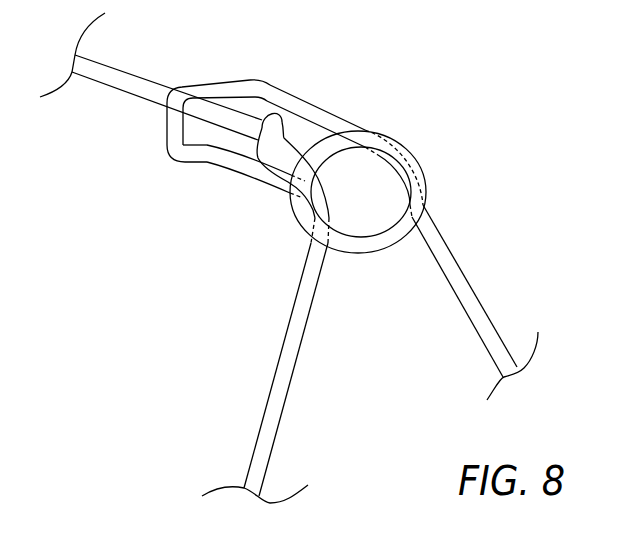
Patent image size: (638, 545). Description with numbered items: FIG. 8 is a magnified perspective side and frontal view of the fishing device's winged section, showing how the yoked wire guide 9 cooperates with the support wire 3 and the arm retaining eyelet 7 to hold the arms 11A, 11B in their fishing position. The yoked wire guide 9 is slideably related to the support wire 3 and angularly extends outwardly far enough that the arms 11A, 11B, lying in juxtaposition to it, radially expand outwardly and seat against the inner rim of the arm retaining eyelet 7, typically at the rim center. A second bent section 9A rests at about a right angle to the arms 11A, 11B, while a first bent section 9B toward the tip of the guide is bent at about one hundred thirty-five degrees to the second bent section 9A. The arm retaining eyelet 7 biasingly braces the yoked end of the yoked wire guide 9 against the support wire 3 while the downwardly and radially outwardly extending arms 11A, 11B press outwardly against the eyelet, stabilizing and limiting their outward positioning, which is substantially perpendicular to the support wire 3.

The support wire 3 is at (90, 75).
The arm retaining eyelet 7 is at (413, 160).
The yoked wire guide 9 is at (232, 102).
The second bent section 9A is at (293, 93).
The first bent section 9B is at (217, 88).
The arm 11A is at (292, 367).
The arm 11B is at (472, 288).